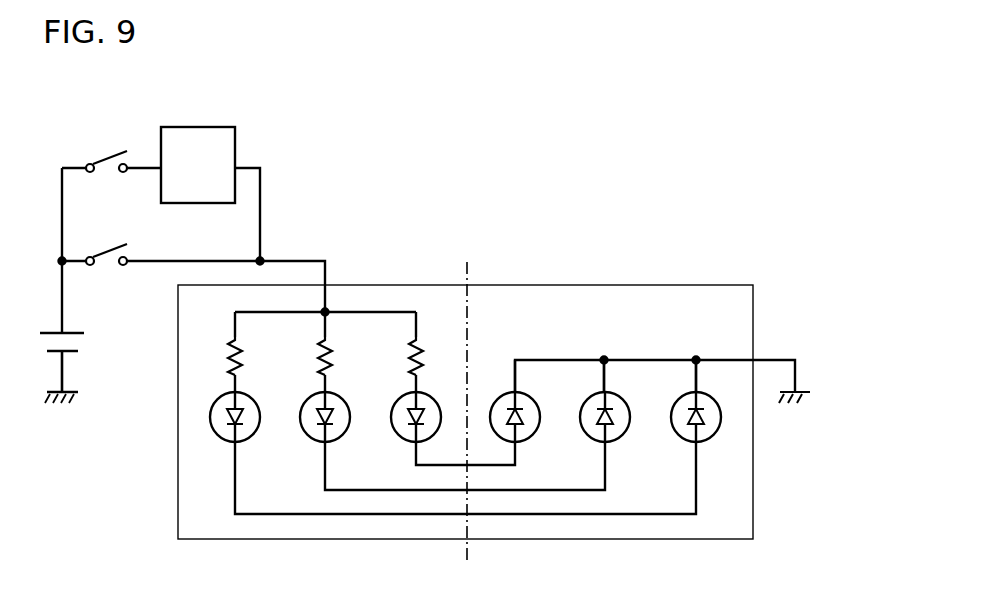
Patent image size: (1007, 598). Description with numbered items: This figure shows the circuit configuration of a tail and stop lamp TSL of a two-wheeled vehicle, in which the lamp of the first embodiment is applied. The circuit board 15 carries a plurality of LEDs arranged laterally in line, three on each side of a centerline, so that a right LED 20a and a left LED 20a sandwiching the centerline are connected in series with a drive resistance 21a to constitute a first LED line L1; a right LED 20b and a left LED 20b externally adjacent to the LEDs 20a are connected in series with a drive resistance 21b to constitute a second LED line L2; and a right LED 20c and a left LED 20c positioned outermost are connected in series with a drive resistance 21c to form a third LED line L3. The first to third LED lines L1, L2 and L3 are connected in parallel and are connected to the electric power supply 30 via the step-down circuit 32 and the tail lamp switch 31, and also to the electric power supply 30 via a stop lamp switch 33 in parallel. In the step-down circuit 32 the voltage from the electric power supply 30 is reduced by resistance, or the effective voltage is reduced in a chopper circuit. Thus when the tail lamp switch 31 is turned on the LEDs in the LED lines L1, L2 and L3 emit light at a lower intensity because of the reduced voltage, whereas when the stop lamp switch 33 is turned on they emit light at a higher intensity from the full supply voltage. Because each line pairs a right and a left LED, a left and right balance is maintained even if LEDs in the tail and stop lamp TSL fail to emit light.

The circuit board 15 is at (725, 305).
The electric power supply 30 is at (53, 326).
The tail lamp switch 31 is at (103, 153).
The stop lamp switch 33 is at (110, 266).
The step-down circuit 32 is at (215, 137).
The tail and stop lamp TSL is at (560, 262).
The drive resistance 21a is at (433, 353).
The drive resistance 21b is at (343, 348).
The drive resistance 21c is at (218, 362).
The LED 20a is at (407, 433).
The LED 20b is at (317, 433).
The LED 20c is at (228, 433).
The first LED line L1 is at (530, 354).
The second LED line L2 is at (618, 354).
The third LED line L3 is at (688, 352).